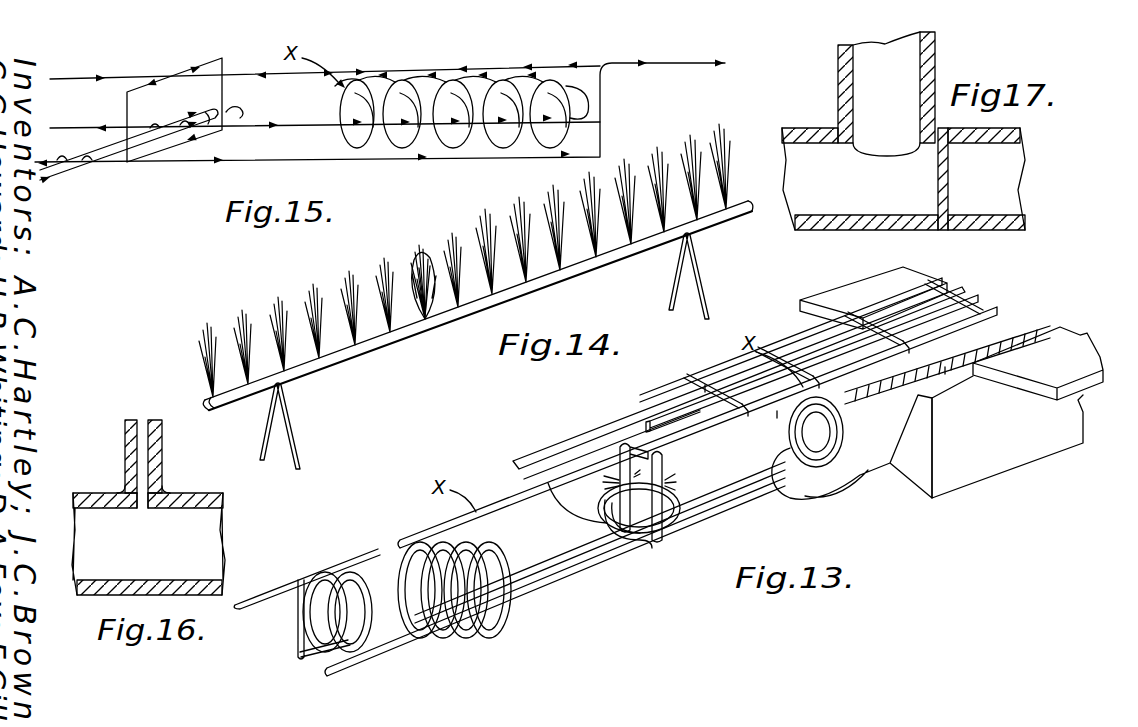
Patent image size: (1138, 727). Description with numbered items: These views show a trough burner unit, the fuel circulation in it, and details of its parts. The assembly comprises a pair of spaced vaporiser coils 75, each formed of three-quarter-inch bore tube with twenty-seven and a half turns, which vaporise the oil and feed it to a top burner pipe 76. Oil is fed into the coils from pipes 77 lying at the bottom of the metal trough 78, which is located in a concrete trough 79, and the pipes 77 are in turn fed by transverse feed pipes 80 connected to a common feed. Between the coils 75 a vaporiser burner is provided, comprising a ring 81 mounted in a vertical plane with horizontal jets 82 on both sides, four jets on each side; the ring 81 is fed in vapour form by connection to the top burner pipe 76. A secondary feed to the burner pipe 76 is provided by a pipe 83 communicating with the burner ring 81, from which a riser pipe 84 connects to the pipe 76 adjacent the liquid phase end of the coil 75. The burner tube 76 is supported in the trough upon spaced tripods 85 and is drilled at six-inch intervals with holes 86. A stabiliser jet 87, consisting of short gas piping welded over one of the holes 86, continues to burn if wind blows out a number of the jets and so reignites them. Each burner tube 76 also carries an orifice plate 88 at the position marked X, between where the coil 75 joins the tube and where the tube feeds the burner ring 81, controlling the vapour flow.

In FIG. 15, the vaporiser coils 75 is at (458, 148).
In FIG. 17, the vaporiser coils 75 is at (866, 73).
In FIG. 13, the vaporiser coils 75 is at (460, 618).
In FIG. 15, the top burner pipe 76 is at (548, 66).
In FIG. 14, the top burner pipe 76 is at (748, 216).
In FIG. 17, the top burner pipe 76 is at (849, 201).
In FIG. 16, the top burner pipe 76 is at (85, 501).
In FIG. 13, the top burner pipe 76 is at (262, 600).
In FIG. 15, the pipes 77 is at (304, 130).
In FIG. 13, the pipes 77 is at (558, 590).
In FIG. 13, the metal trough 78 is at (843, 469).
In FIG. 13, the concrete trough 79 is at (982, 468).
In FIG. 15, the transverse feed pipes 80 is at (92, 162).
In FIG. 13, the transverse feed pipes 80 is at (617, 512).
In FIG. 15, the ring 81 is at (178, 72).
In FIG. 13, the ring 81 is at (665, 458).
In FIG. 13, the horizontal jets 82 is at (628, 490).
In FIG. 15, the pipe 83 is at (357, 158).
In FIG. 13, the pipe 83 is at (512, 580).
In FIG. 15, the riser pipe 84 is at (601, 122).
In FIG. 13, the riser pipe 84 is at (297, 622).
In FIG. 14, the tripods 85 is at (289, 429).
In FIG. 14, the holes 86 is at (390, 340).
In FIG. 16, the holes 86 is at (143, 510).
In FIG. 14, the stabiliser jet 87 is at (425, 323).
In FIG. 16, the stabiliser jet 87 is at (165, 460).
In FIG. 17, the orifice plate 88 is at (950, 180).